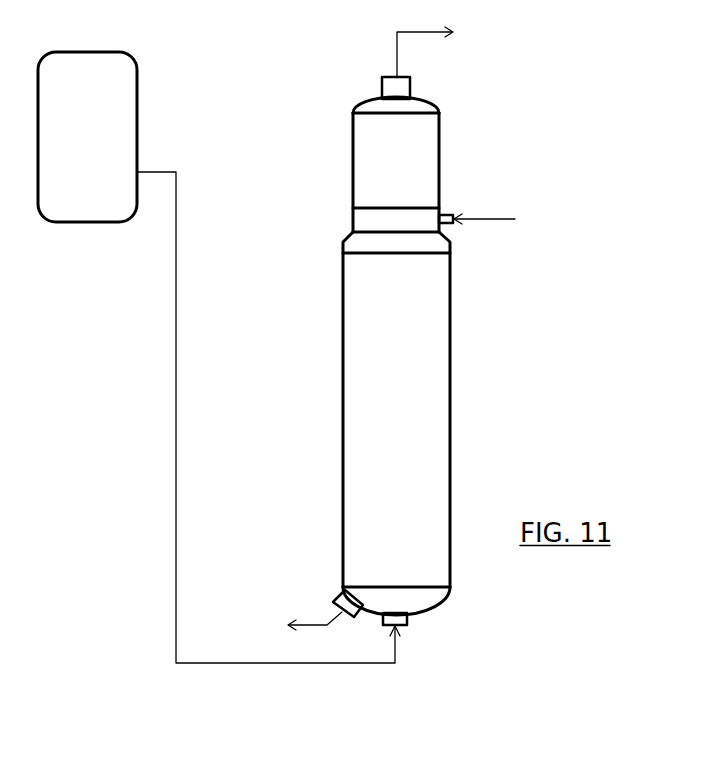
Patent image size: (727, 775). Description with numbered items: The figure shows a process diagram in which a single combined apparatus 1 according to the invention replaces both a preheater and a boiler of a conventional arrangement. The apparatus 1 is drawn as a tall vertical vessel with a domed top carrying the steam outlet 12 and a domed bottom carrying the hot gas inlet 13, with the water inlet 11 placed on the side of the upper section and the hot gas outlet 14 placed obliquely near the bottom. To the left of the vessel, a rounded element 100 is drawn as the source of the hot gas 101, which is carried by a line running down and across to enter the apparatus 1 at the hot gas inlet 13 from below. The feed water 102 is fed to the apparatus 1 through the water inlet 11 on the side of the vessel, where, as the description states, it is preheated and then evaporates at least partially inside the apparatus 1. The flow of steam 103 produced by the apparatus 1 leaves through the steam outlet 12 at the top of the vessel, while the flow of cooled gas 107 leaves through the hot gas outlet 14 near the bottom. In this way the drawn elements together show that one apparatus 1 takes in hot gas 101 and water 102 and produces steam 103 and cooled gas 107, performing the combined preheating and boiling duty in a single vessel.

The combined apparatus 1 is at (482, 372).
The water inlet 11 is at (447, 213).
The steam outlet 12 is at (381, 90).
The hot gas inlet 13 is at (410, 620).
The hot gas outlet 14 is at (339, 592).
The feed tank 100 is at (138, 100).
The hot gas 101 is at (178, 307).
The feed water 102 is at (515, 219).
The flow of steam 103 is at (456, 48).
The flow of cooled gas 107 is at (289, 622).